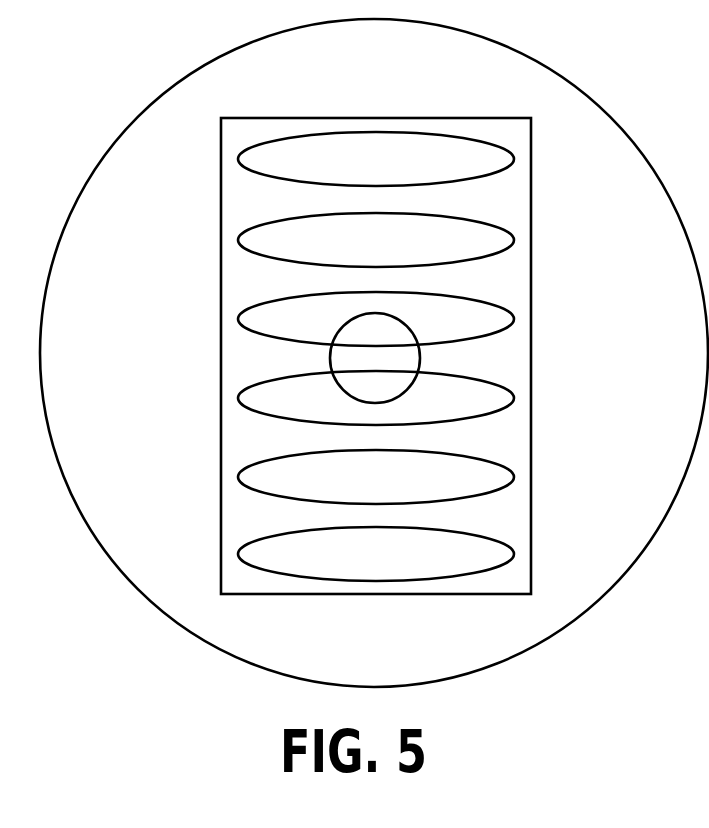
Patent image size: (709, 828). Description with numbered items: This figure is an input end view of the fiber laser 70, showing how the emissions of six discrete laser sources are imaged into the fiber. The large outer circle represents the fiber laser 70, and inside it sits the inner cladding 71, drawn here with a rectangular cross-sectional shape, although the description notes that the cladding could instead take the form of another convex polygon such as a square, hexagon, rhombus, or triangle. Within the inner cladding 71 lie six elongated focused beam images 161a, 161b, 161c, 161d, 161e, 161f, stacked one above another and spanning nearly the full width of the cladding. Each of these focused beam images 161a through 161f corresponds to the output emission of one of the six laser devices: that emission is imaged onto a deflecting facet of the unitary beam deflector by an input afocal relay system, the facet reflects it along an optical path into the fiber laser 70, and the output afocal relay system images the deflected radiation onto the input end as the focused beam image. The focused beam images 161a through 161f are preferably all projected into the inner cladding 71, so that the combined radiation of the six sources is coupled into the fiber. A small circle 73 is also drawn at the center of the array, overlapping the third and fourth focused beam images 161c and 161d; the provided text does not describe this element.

The fiber laser 70 is at (190, 72).
The inner cladding 71 is at (221, 547).
The central circular aperture 73 is at (330, 357).
The focused beam image 161a is at (512, 166).
The focused beam image 161b is at (512, 243).
The focused beam image 161c is at (512, 318).
The focused beam image 161d is at (512, 400).
The focused beam image 161e is at (512, 478).
The focused beam image 161f is at (512, 556).